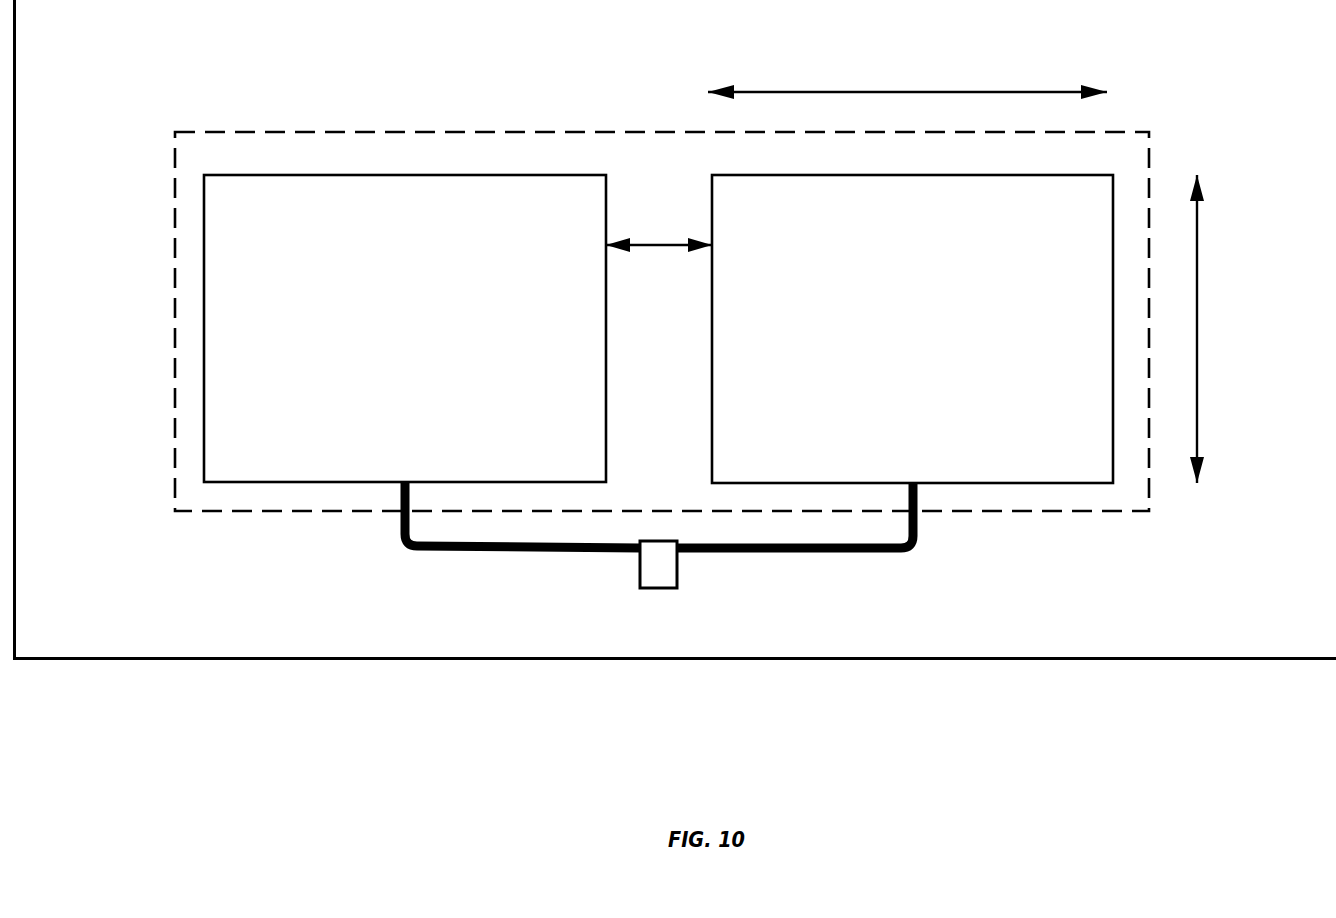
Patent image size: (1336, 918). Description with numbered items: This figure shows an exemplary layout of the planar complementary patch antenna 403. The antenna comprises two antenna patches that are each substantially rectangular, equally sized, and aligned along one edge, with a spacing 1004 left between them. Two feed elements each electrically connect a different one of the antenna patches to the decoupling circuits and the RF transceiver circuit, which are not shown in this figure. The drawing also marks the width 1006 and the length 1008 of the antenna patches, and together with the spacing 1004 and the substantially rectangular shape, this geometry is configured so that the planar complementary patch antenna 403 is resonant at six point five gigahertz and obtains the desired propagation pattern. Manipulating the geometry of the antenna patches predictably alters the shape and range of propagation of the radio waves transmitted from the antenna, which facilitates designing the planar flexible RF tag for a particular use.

The planar complementary patch antenna 403 is at (218, 167).
The spacing 1004 is at (659, 240).
The width 1006 is at (783, 92).
The length 1008 is at (1197, 235).